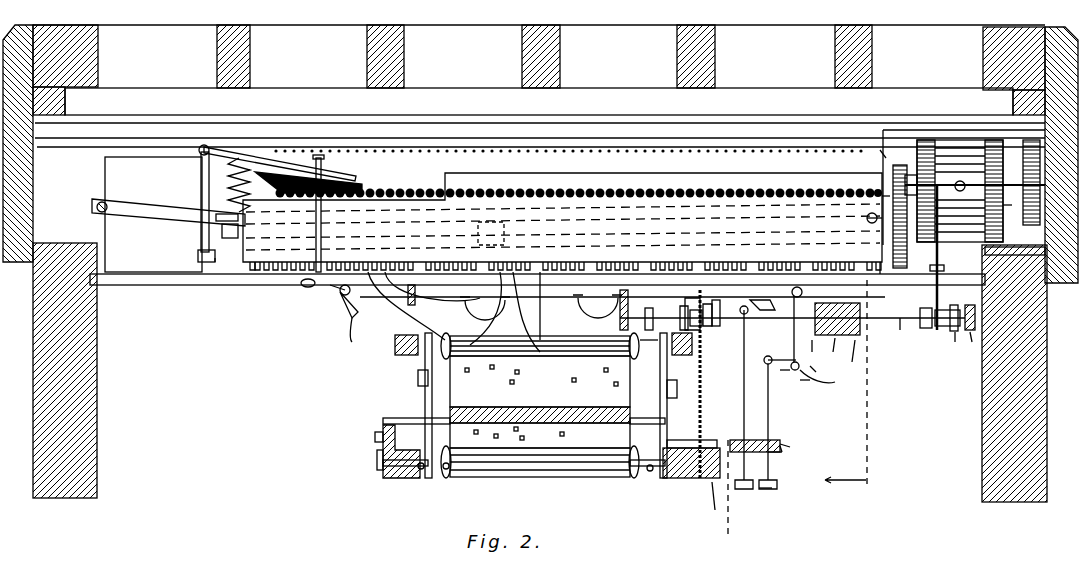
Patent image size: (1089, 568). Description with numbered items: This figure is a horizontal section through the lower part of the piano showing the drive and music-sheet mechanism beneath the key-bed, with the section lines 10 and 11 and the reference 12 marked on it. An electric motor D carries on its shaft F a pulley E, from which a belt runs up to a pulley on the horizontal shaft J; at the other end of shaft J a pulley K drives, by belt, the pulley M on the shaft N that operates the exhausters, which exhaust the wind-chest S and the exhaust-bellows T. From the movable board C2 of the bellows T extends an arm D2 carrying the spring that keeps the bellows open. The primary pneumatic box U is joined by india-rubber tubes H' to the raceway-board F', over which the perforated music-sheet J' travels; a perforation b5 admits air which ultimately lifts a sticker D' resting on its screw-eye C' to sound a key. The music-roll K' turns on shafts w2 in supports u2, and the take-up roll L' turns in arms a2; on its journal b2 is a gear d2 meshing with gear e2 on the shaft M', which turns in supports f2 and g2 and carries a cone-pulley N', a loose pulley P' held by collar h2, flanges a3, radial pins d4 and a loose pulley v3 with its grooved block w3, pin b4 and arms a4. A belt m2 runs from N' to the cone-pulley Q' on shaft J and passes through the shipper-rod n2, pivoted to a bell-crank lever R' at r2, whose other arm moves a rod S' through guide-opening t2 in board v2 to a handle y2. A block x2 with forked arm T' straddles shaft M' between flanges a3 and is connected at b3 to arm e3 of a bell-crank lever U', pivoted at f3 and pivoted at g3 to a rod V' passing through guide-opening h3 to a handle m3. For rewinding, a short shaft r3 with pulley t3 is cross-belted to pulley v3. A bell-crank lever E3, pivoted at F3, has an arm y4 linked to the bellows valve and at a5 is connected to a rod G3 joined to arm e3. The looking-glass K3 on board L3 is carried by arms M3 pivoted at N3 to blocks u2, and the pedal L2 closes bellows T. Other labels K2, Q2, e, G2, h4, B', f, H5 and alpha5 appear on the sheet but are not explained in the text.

The wind-chest S is at (562, 181).
The panel K2 is at (153, 214).
The lever Q2 is at (106, 204).
The vertical bar e is at (200, 233).
The bracket G2 is at (203, 181).
The guide block h4 is at (210, 200).
The arm D2 is at (232, 158).
The movable board C2 is at (280, 168).
The exhaust-bellows T is at (341, 213).
The section line 12 is at (218, 272).
The sticker D' is at (626, 181).
The screw-eye C' is at (604, 181).
The compartment B' is at (604, 182).
The pulley K is at (879, 153).
The pulley E is at (883, 188).
The crank f is at (868, 220).
The section line 11 is at (726, 381).
The section line 10 is at (866, 278).
The electric motor D is at (960, 167).
The cone-pulley Q' is at (957, 173).
The pulley M is at (910, 226).
The horizontal shaft N is at (975, 257).
The motor shaft F is at (1022, 182).
The horizontal shaft J is at (1007, 207).
The india-rubber tube H' is at (637, 268).
The primary pneumatic box U is at (250, 291).
The arm of bell-crank lever y4 is at (330, 285).
The bell-crank lever E3 is at (342, 297).
The pivot F3 is at (350, 297).
The connection a5 is at (352, 322).
The block H5 is at (410, 282).
The rod G3 is at (410, 306).
The pedal L2 is at (454, 312).
The take-up roll L' is at (581, 306).
The support f2 is at (625, 289).
The arms a4 is at (686, 300).
The circular block w3 is at (704, 302).
The looking-glass K3 is at (416, 428).
The perforation b5 is at (576, 437).
The raceway-board F' is at (540, 402).
The music-roll K' is at (524, 473).
The gear d2 is at (648, 366).
The board L3 is at (393, 436).
The arms M3 is at (380, 436).
The pivot N3 is at (372, 446).
The arms a2 is at (424, 378).
The shafts or pinions w2 is at (420, 479).
The radial pins d4 is at (680, 354).
The perforated music-sheet J' is at (643, 361).
The supports u2 is at (710, 480).
The short shaft r3 is at (700, 481).
The pulley t3 is at (716, 505).
The flanges a3 is at (840, 308).
The gear e2 is at (658, 306).
The pin b4 is at (680, 312).
The journal b2 is at (690, 324).
The pulley v3 is at (723, 307).
The pivot r2 is at (744, 384).
The bell-crank lever R' is at (763, 316).
The shaft M' is at (811, 335).
The pivot alpha5 is at (799, 289).
The connection b3 is at (801, 333).
The pivot g3 is at (764, 360).
The bell-crank lever U' is at (791, 381).
The rod S' is at (806, 393).
The pivot f3 is at (820, 385).
The arm e3 is at (820, 374).
The block x2 is at (854, 360).
The handle y2 is at (750, 497).
The forked arm T' is at (834, 354).
The shipper-rod n2 is at (901, 311).
The cone-pulley belt m2 is at (928, 310).
The collar h2 is at (968, 313).
The cone-pulley N' is at (944, 330).
The loose pulley P' is at (956, 346).
The support g2 is at (979, 346).
The guide-opening t2 is at (756, 441).
The rod V' is at (811, 434).
The board v2 is at (782, 446).
The guide-opening h3 is at (782, 452).
The handle m3 is at (772, 488).